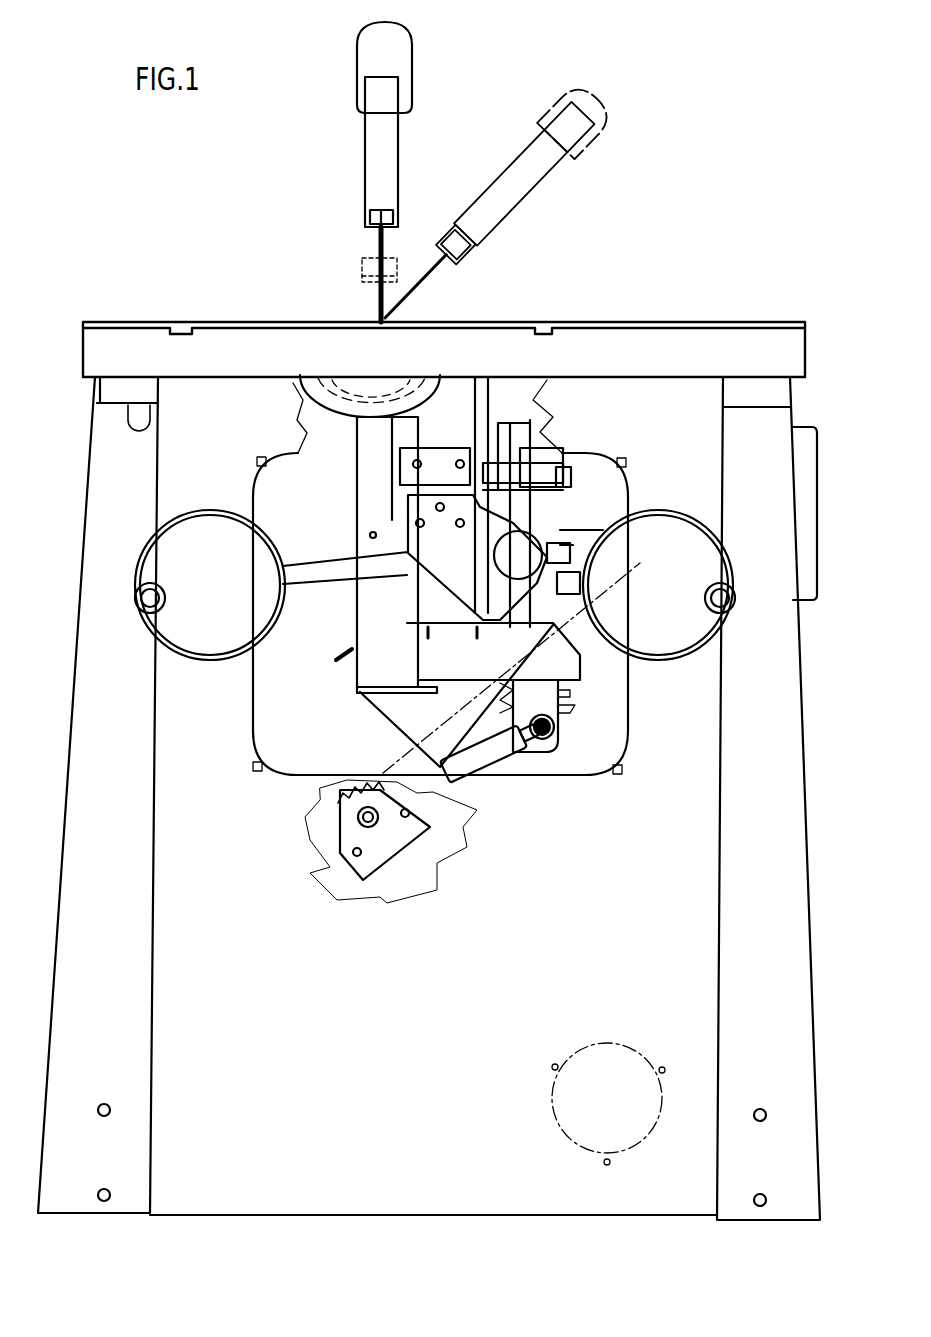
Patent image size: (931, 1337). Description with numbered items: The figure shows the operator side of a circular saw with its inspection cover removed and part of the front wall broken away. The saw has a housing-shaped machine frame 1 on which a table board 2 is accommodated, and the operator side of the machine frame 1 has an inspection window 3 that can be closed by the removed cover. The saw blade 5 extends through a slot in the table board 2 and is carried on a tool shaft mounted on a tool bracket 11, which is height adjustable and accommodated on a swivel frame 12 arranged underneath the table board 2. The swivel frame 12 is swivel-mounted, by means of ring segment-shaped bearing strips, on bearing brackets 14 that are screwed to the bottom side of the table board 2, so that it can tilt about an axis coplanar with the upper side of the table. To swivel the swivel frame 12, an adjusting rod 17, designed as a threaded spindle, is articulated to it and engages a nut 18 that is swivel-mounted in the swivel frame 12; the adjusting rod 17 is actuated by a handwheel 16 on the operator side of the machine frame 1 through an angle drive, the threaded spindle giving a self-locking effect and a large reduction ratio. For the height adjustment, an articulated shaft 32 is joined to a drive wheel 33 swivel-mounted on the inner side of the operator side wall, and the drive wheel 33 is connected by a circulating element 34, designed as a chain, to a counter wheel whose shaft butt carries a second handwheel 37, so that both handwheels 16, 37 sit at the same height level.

The machine frame 1 is at (80, 427).
The table board 2 is at (608, 323).
The inspection window 3 is at (593, 735).
The saw blade 5 is at (373, 240).
The tool bracket 11 is at (572, 459).
The swivel frame 12 is at (336, 660).
The bearing brackets 14 is at (343, 377).
The handwheel 16 is at (197, 540).
The adjusting rod 17 is at (325, 575).
The nut 18 is at (517, 558).
The articulated shaft 32 is at (520, 747).
The drive wheel 33 is at (365, 805).
The circulating element 34 is at (385, 730).
The handwheel 37 is at (678, 540).